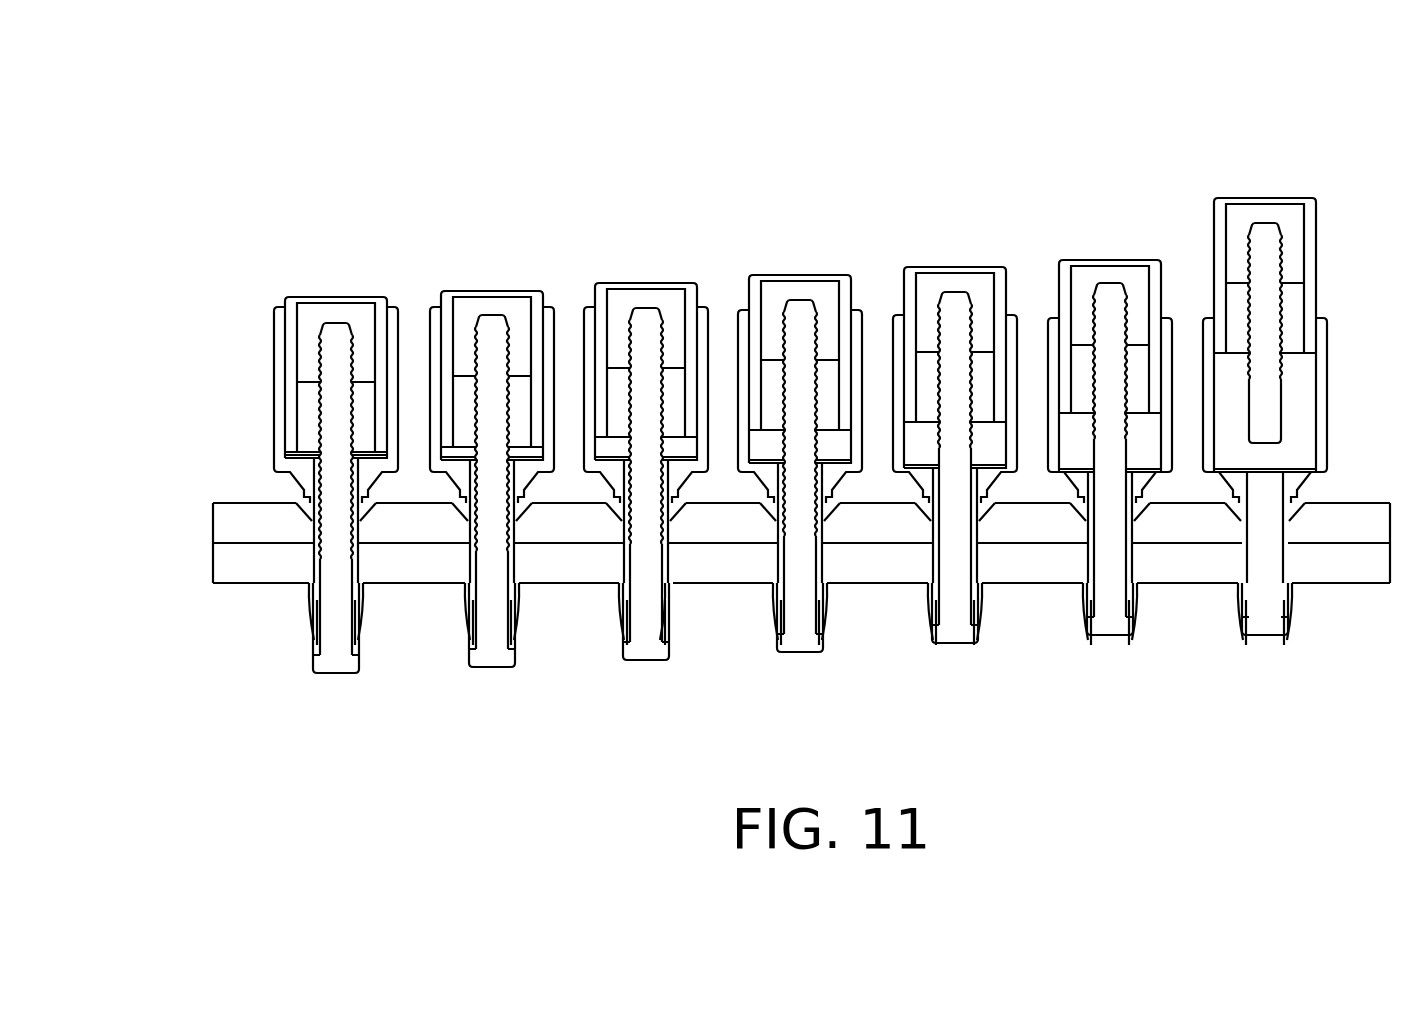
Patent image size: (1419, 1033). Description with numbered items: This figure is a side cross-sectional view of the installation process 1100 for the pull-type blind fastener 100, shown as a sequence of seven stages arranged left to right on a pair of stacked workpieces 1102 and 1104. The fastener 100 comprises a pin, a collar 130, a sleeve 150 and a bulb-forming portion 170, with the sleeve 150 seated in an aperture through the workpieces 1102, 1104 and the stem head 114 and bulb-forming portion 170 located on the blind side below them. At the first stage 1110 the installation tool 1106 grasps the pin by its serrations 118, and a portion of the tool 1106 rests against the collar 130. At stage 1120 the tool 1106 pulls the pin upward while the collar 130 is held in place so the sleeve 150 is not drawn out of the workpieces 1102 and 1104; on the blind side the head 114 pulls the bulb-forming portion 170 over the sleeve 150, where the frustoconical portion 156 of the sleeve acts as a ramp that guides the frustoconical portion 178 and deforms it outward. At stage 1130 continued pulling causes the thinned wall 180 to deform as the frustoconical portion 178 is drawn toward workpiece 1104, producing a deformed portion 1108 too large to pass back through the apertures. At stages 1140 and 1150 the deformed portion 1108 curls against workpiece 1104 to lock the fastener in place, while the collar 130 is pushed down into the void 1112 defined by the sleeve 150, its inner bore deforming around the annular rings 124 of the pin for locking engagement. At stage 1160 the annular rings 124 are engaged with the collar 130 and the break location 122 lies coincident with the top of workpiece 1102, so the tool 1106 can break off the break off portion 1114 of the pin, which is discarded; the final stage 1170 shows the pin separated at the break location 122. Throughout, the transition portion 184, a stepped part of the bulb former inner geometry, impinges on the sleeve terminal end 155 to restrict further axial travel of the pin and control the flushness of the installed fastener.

The installation process 1100 is at (238, 106).
The workpiece 1102 is at (228, 514).
The workpiece 1104 is at (225, 572).
The installation tool 1106 is at (270, 348).
The deformed portion 1108 is at (615, 594).
The installation step 1110 is at (298, 474).
The void 1112 is at (670, 514).
The break off portion 1114 is at (1271, 397).
The installation step 1120 is at (510, 439).
The installation step 1130 is at (666, 431).
The installation step 1140 is at (801, 450).
The installation step 1150 is at (968, 247).
The installation step 1160 is at (1131, 446).
The fastener assembly in seventh state 1170 is at (1307, 387).
The fastener 100 is at (327, 660).
The stem head 114 is at (345, 666).
The serrations 118 is at (320, 407).
The break location 122 is at (828, 514).
The annular rings 124 is at (785, 542).
The collar 130 is at (310, 498).
The sleeve 150 is at (312, 585).
The sleeve terminal end 155 is at (1134, 600).
The frustoconical portion 156 is at (516, 597).
The bulb-forming portion 170 is at (312, 645).
The frustoconical portion 178 is at (518, 606).
The thinned wall 180 is at (676, 612).
The transition portion 184 is at (1128, 602).